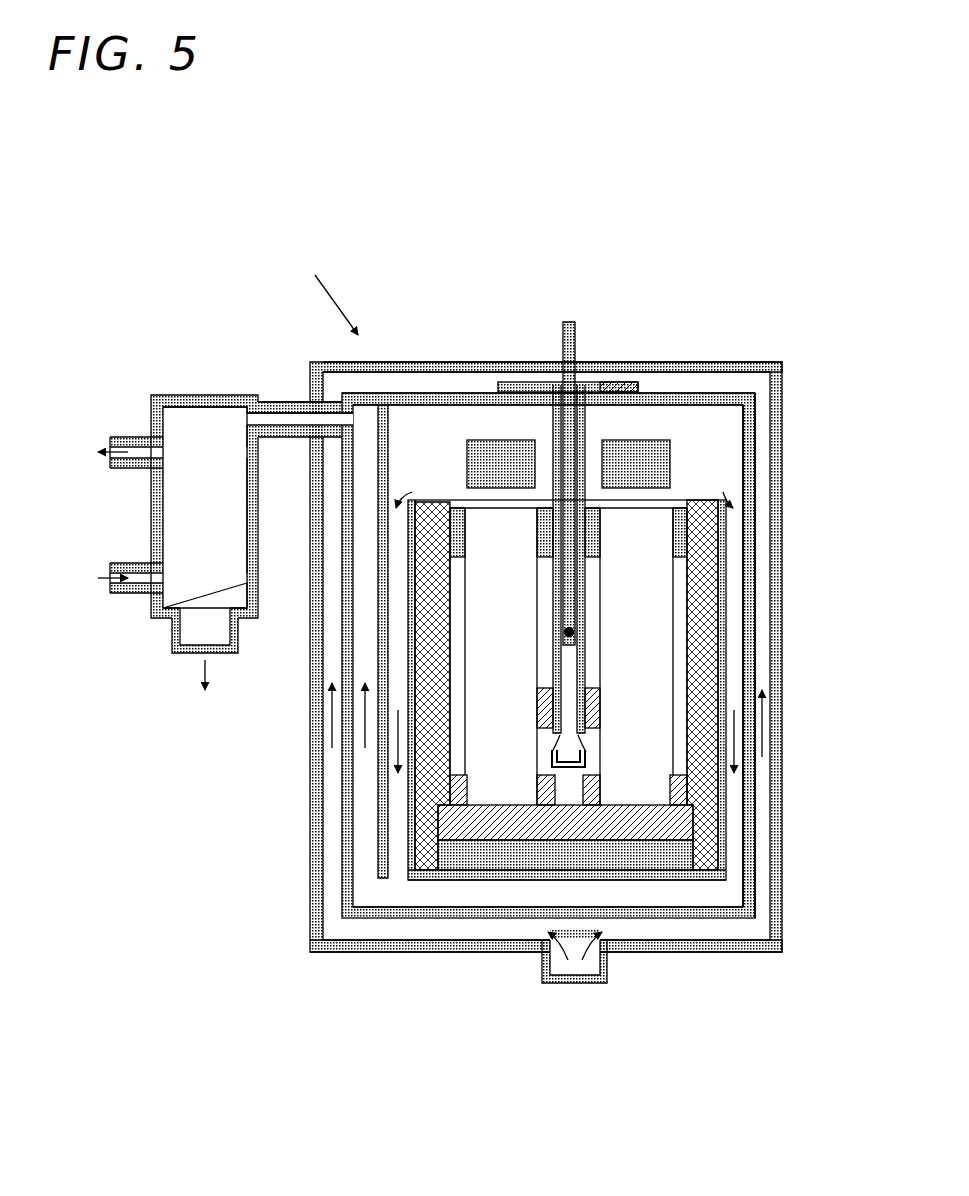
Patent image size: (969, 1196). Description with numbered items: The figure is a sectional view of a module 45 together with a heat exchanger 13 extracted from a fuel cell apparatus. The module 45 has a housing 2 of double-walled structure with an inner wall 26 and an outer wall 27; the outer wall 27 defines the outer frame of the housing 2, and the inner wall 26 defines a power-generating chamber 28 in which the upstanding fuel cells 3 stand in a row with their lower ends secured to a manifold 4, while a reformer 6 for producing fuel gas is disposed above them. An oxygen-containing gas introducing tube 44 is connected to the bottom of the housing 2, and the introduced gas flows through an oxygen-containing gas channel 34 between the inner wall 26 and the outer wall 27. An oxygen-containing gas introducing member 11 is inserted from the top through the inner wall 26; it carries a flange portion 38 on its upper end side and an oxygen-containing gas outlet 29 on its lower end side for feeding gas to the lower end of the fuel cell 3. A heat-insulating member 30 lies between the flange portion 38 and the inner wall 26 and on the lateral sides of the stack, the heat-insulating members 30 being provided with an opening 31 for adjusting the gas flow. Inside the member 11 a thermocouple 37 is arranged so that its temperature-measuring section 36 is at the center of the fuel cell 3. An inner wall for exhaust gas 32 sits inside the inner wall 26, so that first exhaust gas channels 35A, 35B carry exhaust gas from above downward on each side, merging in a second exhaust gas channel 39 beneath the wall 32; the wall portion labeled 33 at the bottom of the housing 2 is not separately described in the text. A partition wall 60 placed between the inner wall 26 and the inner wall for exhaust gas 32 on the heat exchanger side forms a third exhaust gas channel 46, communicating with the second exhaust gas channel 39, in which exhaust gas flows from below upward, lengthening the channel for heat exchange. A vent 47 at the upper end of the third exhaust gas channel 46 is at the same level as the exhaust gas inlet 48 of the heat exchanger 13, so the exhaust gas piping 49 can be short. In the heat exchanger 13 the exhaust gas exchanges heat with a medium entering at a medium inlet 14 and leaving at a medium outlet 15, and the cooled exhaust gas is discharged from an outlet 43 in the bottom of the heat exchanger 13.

The housing 2 is at (350, 362).
The fuel cell 3 is at (723, 492).
The manifold 4 is at (697, 823).
The reformer 6 is at (663, 440).
The oxygen-containing gas introducing member 11 is at (465, 425).
The heat exchanger 13 is at (148, 395).
The medium inlet 14 is at (115, 597).
The medium outlet 15 is at (108, 435).
The inner wall 26 is at (783, 478).
The outer wall 27 is at (718, 358).
The power-generating chamber 28 is at (400, 418).
The oxygen-containing gas outlet 29 is at (552, 755).
The heat-insulating member 30 is at (642, 390).
The opening 31 is at (590, 650).
The inner wall for exhaust gas 32 is at (705, 562).
The outer container bottom wall 33 is at (410, 927).
The oxygen-containing gas channel 34 is at (760, 802).
The first exhaust gas channel 35A is at (400, 800).
The first exhaust gas channel 35B is at (732, 850).
The temperature-measuring section 36 is at (563, 630).
The thermocouple 37 is at (577, 353).
The flange portion 38 is at (597, 388).
The second exhaust gas channel 39 is at (673, 893).
The outlet 43 is at (172, 645).
The oxygen-containing gas introducing tube 44 is at (540, 968).
The module 45 is at (333, 290).
The third exhaust gas channel 46 is at (362, 782).
The vent 47 is at (350, 420).
The exhaust gas inlet 48 is at (237, 420).
The exhaust gas piping 49 is at (267, 400).
The partition wall 60 is at (383, 852).